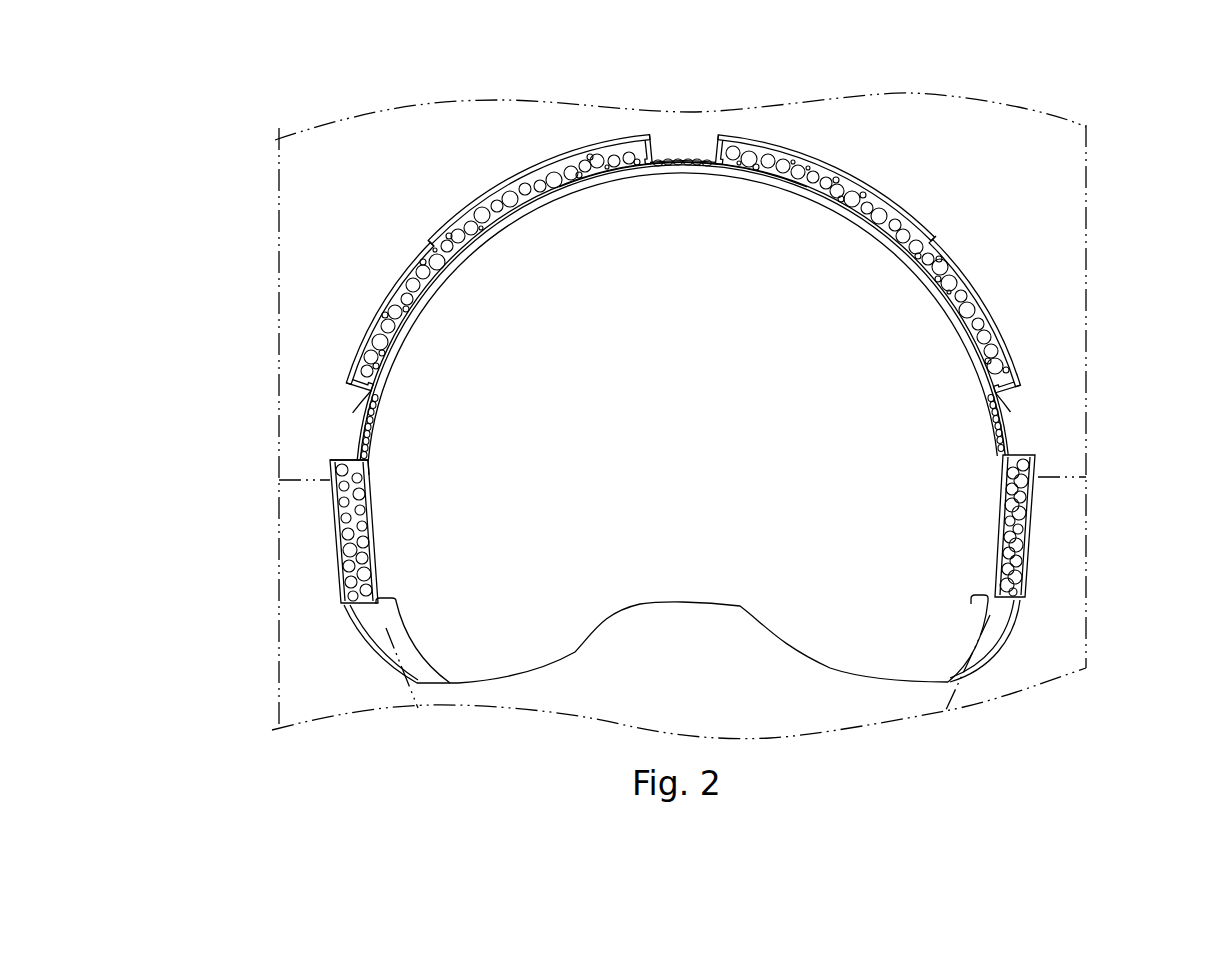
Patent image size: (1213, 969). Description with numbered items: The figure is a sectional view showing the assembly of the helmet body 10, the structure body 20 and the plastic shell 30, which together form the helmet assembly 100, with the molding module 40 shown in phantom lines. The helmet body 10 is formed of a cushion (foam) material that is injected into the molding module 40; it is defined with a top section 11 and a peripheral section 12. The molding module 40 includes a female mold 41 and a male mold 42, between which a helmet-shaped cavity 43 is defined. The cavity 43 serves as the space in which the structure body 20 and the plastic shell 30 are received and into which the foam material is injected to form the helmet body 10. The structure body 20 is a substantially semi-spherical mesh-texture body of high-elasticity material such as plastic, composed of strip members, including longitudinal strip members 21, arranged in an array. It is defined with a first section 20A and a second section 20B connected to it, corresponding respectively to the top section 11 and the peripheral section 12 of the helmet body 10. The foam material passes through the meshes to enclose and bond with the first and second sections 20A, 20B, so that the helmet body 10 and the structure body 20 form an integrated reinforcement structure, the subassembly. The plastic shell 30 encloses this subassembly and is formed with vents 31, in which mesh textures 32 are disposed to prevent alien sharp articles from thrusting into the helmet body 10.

The helmet assembly 100 is at (684, 386).
The helmet body 10 is at (479, 263).
The top section 11 is at (607, 146).
The peripheral section 12 is at (345, 477).
The structure body 20 is at (688, 264).
The first section 20A is at (632, 186).
The second section 20B is at (684, 459).
The longitudinal strip members 21 is at (545, 215).
The plastic shell 30 is at (764, 147).
The vents 31 is at (672, 146).
The mesh textures 32 is at (704, 152).
The molding module 40 is at (695, 443).
The female mold 41 is at (1076, 257).
The male mold 42 is at (295, 590).
The cavity 43 is at (765, 705).